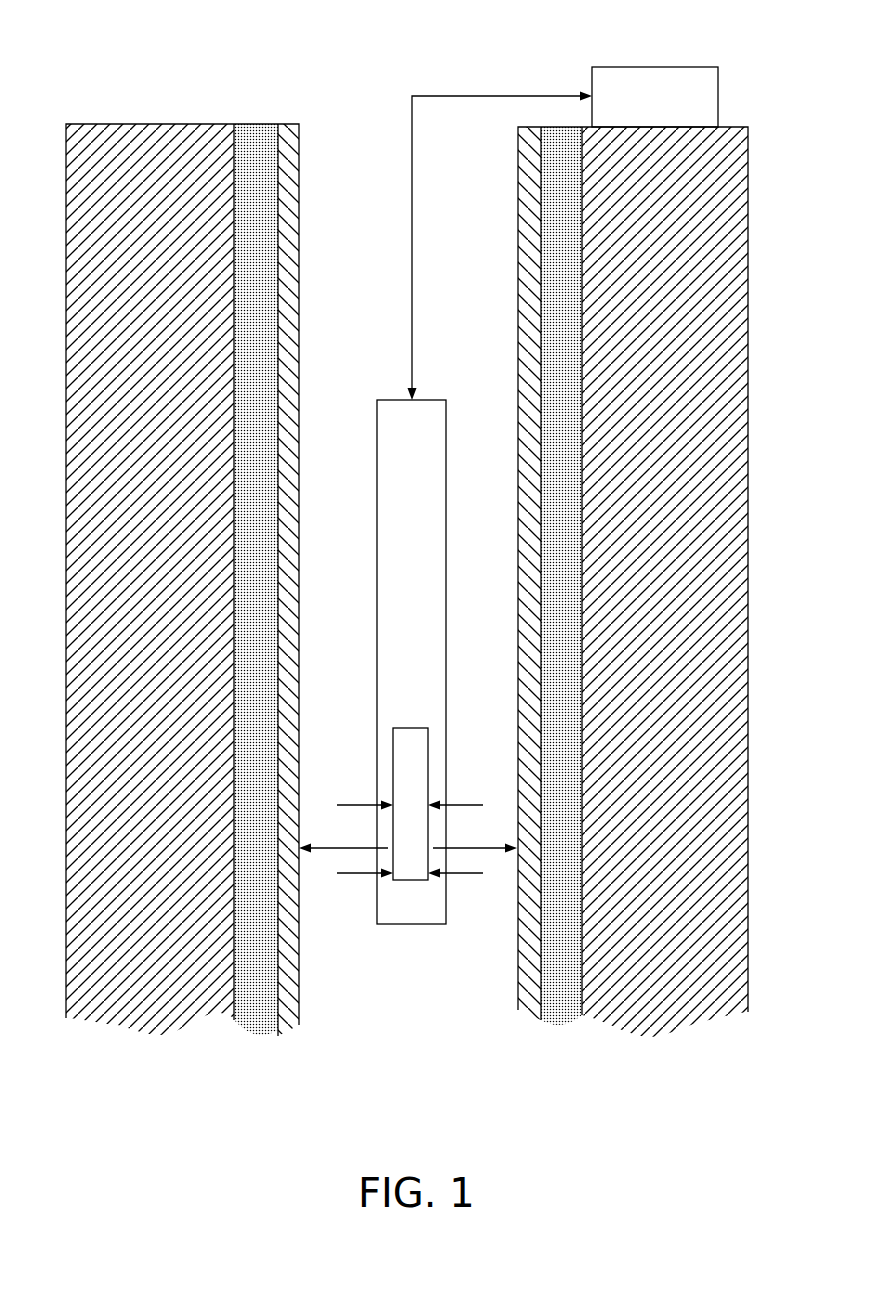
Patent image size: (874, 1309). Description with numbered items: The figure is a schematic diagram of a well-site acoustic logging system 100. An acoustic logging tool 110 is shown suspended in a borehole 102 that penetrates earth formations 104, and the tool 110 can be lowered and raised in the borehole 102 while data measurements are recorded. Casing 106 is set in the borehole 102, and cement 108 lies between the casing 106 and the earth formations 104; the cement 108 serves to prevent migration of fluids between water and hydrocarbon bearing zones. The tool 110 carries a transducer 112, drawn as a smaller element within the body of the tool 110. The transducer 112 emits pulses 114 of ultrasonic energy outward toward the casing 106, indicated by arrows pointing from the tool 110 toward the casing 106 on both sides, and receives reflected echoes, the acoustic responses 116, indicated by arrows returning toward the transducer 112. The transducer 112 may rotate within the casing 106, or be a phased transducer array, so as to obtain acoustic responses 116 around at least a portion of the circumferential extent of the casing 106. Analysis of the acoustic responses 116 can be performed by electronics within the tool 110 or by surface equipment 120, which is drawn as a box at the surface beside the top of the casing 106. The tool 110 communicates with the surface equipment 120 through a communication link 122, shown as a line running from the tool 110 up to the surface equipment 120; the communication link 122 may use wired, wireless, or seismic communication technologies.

The well-site acoustic logging system 100 is at (148, 1212).
The borehole 102 is at (340, 248).
The earth formations 104 is at (74, 509).
The casing 106 is at (304, 141).
The cement 108 is at (257, 112).
The acoustic logging tool 110 is at (412, 938).
The transducer 112 is at (410, 727).
The pulses 114 is at (330, 848).
The acoustic responses 116 is at (350, 804).
The surface equipment 120 is at (652, 66).
The communication link 122 is at (437, 80).